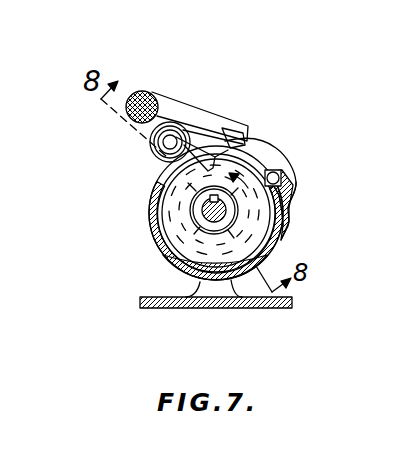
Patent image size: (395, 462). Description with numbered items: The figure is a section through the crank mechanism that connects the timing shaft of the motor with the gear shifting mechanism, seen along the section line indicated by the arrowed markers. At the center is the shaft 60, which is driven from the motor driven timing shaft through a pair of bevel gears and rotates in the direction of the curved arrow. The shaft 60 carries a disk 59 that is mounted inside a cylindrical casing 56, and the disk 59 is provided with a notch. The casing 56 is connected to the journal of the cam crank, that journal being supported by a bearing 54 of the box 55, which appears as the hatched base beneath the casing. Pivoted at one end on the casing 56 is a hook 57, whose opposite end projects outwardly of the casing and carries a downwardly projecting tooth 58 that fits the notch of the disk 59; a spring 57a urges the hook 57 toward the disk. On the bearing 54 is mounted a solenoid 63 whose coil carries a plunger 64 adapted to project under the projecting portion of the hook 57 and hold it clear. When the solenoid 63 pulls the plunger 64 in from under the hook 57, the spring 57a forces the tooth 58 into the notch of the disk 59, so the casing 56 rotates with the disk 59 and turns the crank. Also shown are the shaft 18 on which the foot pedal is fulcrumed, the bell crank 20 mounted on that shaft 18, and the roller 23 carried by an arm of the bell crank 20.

The shaft 18 is at (151, 96).
The bell crank 20 is at (178, 110).
The roller 23 is at (227, 140).
The bearing 54 is at (200, 285).
The box 55 is at (222, 309).
The cylindrical casing 56 is at (153, 230).
The hook 57 is at (247, 150).
The spring 57a is at (293, 162).
The tooth 58 is at (165, 177).
The disk 59 is at (170, 209).
The shaft 60 is at (226, 210).
The solenoid 63 is at (163, 143).
The plunger 64 is at (186, 148).